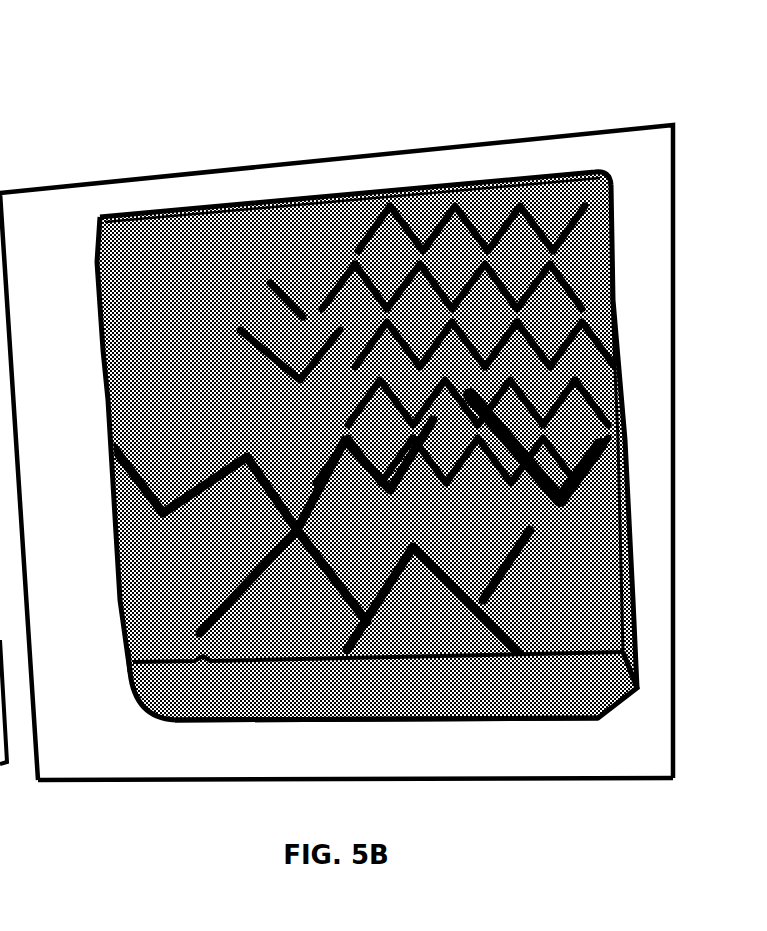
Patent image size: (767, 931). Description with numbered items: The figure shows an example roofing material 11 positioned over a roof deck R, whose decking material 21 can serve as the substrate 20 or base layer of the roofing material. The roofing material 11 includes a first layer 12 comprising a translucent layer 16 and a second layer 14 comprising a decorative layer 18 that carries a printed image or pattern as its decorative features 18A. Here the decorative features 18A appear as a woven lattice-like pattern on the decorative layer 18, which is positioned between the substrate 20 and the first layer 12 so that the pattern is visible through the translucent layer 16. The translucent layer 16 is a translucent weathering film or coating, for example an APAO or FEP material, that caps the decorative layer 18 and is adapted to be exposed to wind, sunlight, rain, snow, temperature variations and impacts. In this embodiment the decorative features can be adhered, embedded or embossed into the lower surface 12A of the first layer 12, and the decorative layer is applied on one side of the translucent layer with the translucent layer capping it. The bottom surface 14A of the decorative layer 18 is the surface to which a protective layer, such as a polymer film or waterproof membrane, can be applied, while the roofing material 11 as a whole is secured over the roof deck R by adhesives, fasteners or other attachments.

The roofing material 11 is at (648, 220).
The first layer 12 is at (172, 236).
The lower surface of the first layer 12A is at (143, 707).
The second layer 14 is at (518, 662).
The bottom surface of the decorative layer 14A is at (633, 570).
The translucent layer 16 is at (427, 185).
The decorative layer 18 is at (580, 422).
The decorative features 18A is at (628, 505).
The substrate 20 is at (640, 752).
The decking material 21 is at (223, 137).
The roof deck R is at (304, 105).